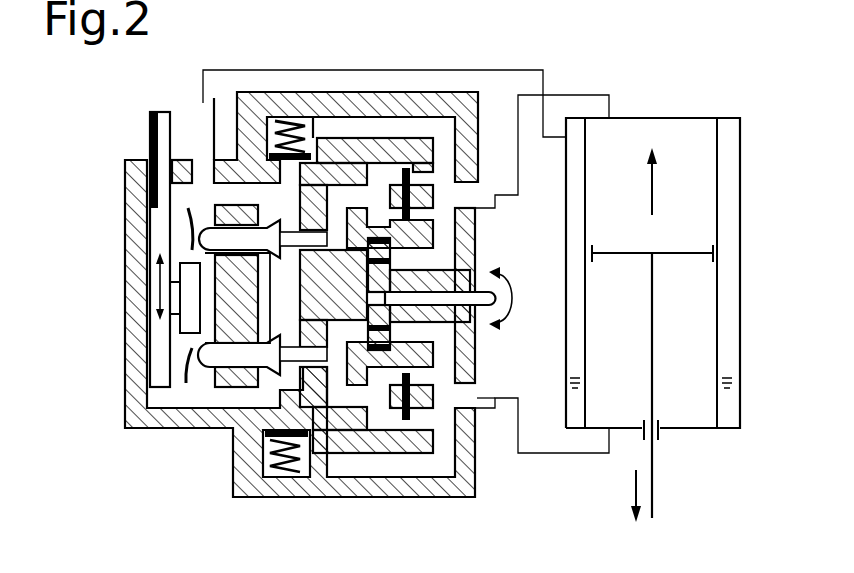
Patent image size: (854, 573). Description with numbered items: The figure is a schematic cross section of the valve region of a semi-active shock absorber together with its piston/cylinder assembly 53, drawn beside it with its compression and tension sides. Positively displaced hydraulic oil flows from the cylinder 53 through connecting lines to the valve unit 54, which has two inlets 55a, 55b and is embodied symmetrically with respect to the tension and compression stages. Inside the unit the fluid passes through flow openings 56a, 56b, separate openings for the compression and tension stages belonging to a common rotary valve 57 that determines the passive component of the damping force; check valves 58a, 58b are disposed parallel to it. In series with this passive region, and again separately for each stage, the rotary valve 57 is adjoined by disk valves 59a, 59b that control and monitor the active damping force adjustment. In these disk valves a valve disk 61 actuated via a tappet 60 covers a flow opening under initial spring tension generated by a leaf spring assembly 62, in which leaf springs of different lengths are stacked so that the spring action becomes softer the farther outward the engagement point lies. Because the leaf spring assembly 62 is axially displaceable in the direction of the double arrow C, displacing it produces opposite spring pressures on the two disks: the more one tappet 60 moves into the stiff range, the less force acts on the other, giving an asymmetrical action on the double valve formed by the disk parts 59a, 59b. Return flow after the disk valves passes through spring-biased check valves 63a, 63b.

The piston/cylinder assembly 53 is at (742, 328).
The valve unit 54 is at (212, 450).
The inlet 55a is at (490, 402).
The inlet 55b is at (490, 202).
The flow opening 56a is at (395, 327).
The flow opening 56b is at (395, 262).
The rotary valve 57 is at (468, 312).
The check valve 58a is at (430, 405).
The check valve 58b is at (428, 196).
The disk valve 59a is at (292, 372).
The disk valve 59b is at (268, 226).
The tappet 60 is at (200, 205).
The valve disk 61 is at (278, 332).
The leaf spring assembly 62 is at (150, 225).
The spring-biased check valve 63a is at (262, 122).
The spring-biased check valve 63b is at (257, 455).
The double arrow C is at (148, 290).